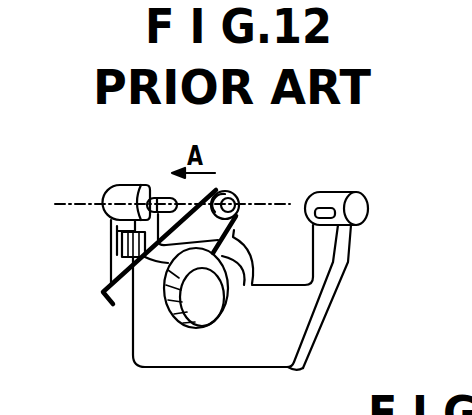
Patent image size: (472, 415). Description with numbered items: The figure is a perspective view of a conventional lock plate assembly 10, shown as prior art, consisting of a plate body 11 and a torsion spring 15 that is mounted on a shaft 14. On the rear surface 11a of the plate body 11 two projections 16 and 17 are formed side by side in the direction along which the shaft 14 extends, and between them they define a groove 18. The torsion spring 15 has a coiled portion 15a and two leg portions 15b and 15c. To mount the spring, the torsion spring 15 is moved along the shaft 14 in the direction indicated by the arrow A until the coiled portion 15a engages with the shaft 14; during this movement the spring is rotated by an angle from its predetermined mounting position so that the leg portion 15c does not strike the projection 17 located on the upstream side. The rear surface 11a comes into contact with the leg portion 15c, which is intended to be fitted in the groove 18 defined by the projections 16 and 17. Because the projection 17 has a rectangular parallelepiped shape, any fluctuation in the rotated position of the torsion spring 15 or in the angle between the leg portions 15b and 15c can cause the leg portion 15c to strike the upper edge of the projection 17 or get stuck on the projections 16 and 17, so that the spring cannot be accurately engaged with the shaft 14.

The pressure roller release assembly 10 is at (376, 244).
The plate body 11 is at (327, 308).
The rear surface 11a is at (243, 350).
The shaft 14 is at (164, 186).
The torsion spring 15 is at (266, 174).
The coiled portion 15a is at (291, 157).
The leg portion 15b is at (101, 300).
The leg portion 15c is at (232, 238).
The projection 16 is at (112, 255).
The projection 17 is at (196, 288).
The groove 18 is at (112, 228).